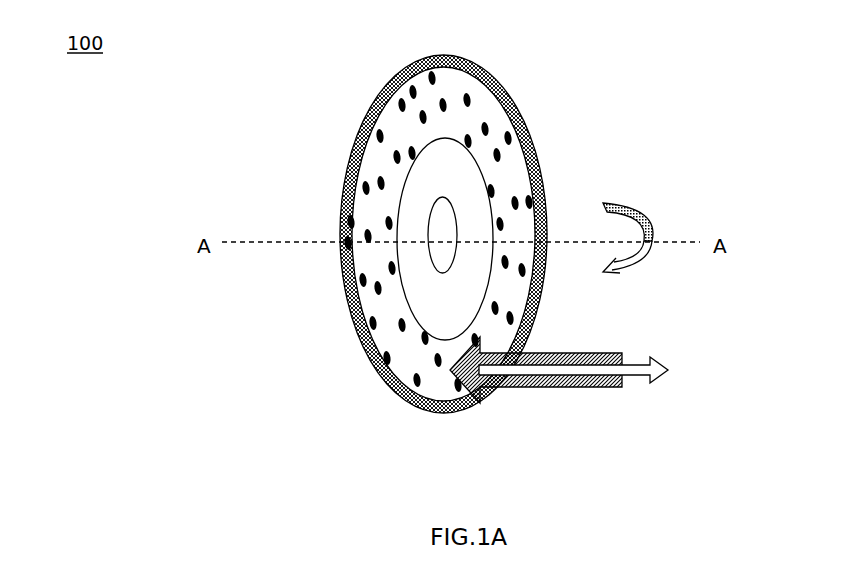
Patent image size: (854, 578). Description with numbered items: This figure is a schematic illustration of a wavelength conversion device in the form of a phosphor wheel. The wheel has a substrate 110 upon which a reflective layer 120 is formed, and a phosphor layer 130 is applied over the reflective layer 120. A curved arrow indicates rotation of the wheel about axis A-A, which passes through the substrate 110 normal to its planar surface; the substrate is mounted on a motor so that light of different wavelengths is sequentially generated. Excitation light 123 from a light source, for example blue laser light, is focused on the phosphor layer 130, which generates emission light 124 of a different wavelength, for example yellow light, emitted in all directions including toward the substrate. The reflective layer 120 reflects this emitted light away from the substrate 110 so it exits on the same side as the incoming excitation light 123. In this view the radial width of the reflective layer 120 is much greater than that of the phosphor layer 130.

The substrate 110 is at (357, 337).
The reflective layer 120 is at (480, 110).
The excitation light 123 is at (535, 388).
The emission light 124 is at (637, 380).
The phosphor layer 130 is at (533, 148).